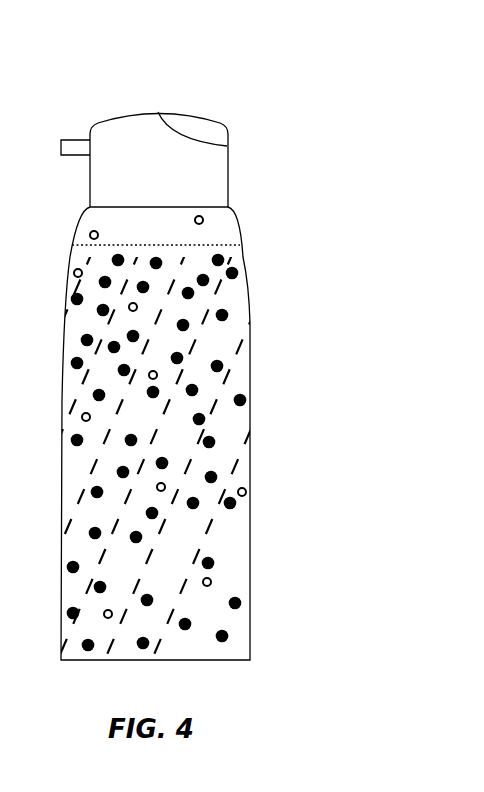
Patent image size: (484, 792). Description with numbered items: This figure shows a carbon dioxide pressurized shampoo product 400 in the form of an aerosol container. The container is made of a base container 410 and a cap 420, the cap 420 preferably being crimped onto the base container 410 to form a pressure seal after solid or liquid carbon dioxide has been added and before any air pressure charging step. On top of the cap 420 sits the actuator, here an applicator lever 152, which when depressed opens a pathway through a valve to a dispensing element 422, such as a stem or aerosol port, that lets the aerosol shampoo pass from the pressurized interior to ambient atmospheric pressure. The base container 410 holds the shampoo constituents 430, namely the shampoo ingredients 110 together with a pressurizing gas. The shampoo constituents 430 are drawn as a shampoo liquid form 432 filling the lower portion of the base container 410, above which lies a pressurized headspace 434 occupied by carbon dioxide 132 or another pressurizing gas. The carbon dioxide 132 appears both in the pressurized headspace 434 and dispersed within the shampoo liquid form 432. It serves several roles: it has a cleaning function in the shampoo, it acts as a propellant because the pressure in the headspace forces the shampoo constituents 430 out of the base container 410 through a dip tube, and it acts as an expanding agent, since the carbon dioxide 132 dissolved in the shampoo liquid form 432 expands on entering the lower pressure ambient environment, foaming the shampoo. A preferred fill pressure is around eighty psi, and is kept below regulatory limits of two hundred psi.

The carbon dioxide pressurized shampoo product 400 is at (314, 42).
The shampoo ingredients 110 is at (251, 385).
The carbon dioxide 132 is at (91, 231).
The applicator lever 152 is at (213, 114).
The base container 410 is at (235, 214).
The cap 420 is at (118, 109).
The dispensing element 422 is at (61, 151).
The shampoo constituents 430 is at (287, 307).
The shampoo liquid form 432 is at (174, 570).
The pressurized headspace 434 is at (180, 240).